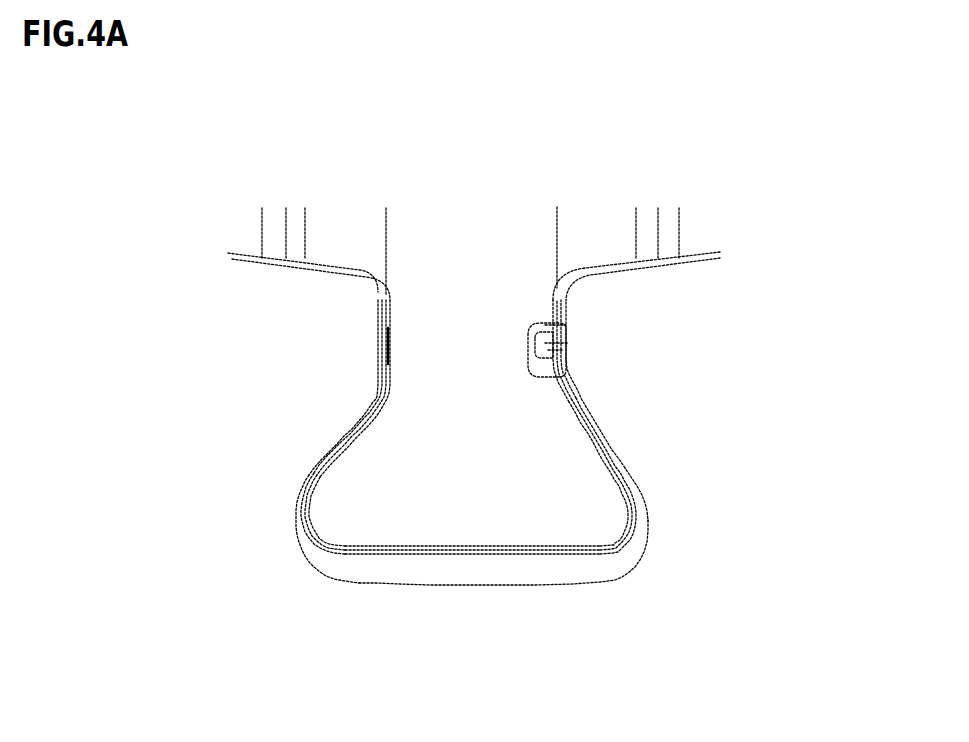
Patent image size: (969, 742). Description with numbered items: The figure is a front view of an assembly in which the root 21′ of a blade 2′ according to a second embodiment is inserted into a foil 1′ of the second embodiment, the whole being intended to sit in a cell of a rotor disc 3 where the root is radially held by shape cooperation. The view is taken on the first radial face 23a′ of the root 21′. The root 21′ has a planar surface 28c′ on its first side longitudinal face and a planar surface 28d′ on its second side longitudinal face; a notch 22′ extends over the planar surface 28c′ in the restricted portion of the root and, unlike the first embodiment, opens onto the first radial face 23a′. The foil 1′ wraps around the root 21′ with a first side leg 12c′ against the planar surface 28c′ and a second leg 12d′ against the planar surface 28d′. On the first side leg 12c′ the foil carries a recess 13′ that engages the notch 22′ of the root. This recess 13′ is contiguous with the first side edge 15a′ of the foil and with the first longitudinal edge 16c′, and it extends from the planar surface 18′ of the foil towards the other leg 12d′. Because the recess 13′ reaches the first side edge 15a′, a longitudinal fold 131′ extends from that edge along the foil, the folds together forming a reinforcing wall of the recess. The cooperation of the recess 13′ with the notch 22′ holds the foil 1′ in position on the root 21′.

The blade 2′ is at (380, 234).
The planar surface of the second side longitudinal face 28d′ is at (387, 328).
The planar surface of the first side longitudinal face 28c′ is at (553, 318).
The second leg 12d′ is at (355, 420).
The root 21′ is at (316, 467).
The first radial face 23a′ is at (280, 484).
The foil 1′ is at (636, 525).
The first side leg 12c′ is at (598, 437).
The first side edge 15a′ is at (588, 418).
The notch 22′ is at (527, 322).
The recess 13′ is at (540, 346).
The first longitudinal edge 16c′ is at (567, 328).
The planar surface 18′ is at (568, 342).
The longitudinal fold 131′ is at (563, 347).
The rotor disc 3 is at (716, 507).